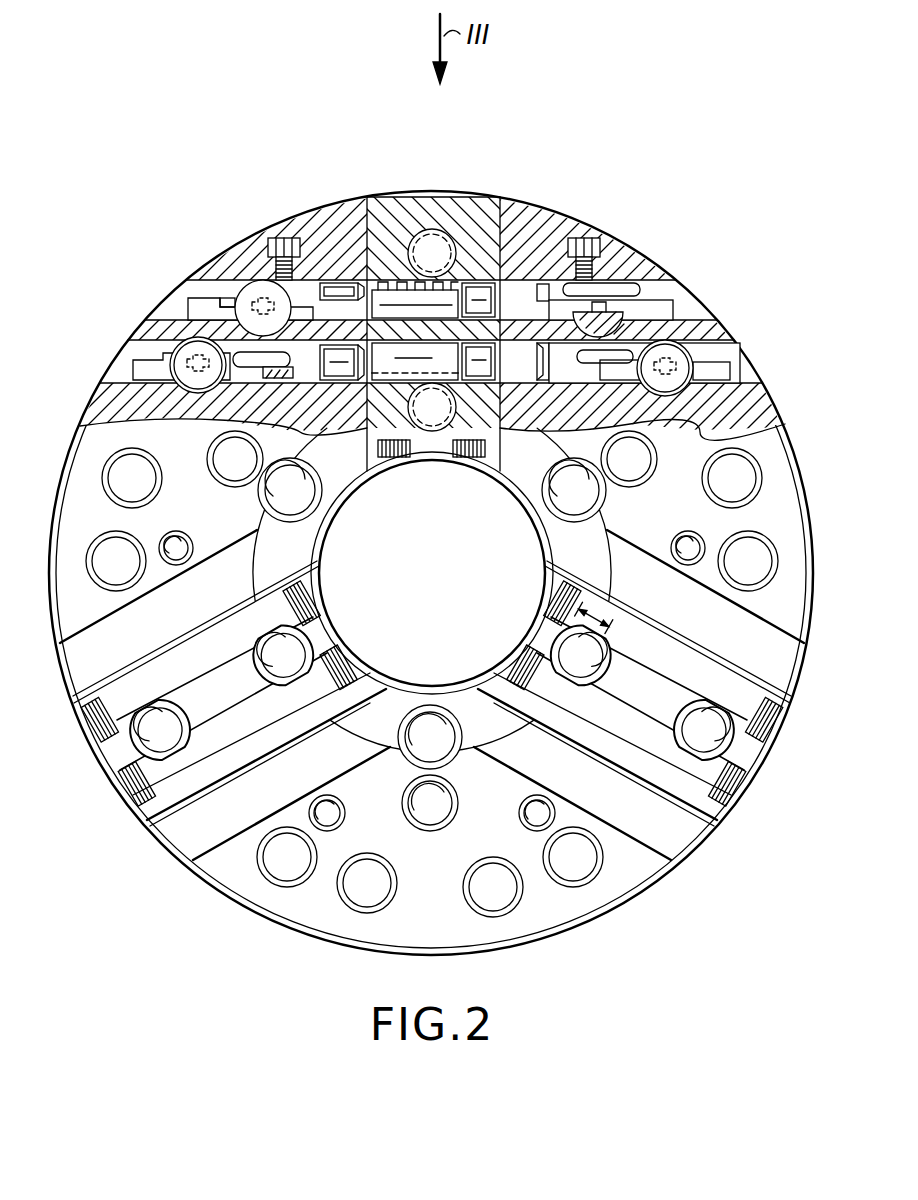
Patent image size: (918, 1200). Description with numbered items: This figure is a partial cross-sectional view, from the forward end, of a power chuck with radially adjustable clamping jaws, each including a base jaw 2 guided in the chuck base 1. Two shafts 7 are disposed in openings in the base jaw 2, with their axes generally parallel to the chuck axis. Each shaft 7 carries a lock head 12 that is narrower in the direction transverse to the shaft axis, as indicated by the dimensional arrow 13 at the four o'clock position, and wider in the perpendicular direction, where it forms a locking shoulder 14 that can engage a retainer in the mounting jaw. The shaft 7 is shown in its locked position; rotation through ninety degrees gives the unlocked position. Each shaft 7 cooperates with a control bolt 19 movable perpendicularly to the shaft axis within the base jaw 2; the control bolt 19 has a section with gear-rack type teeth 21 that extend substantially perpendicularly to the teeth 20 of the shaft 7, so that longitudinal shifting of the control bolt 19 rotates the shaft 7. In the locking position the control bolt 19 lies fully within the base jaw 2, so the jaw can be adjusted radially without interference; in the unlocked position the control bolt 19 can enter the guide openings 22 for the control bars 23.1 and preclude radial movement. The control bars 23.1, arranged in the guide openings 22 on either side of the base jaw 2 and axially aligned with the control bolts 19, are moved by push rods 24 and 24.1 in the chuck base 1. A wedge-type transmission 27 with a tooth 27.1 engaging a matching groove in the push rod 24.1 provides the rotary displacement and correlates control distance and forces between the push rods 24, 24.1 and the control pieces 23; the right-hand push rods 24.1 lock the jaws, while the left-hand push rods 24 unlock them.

The chuck base 1 is at (796, 478).
The base jaw 2 is at (472, 230).
The shaft 7 is at (434, 235).
The lock head 12 is at (575, 655).
The dimensional arrow 13 is at (600, 605).
The locking shoulder 14 is at (712, 745).
The control bolt 19 is at (374, 298).
The teeth of the shaft 20 is at (418, 268).
The gear-rack type teeth 21 is at (403, 283).
The guide opening 22 is at (520, 298).
The control piece 23 is at (322, 292).
The control bar 23.1 is at (568, 298).
The push rod 24 is at (248, 298).
The push rod 24.1 is at (612, 310).
The transmission 27 is at (258, 288).
The tooth 27.1 is at (262, 300).